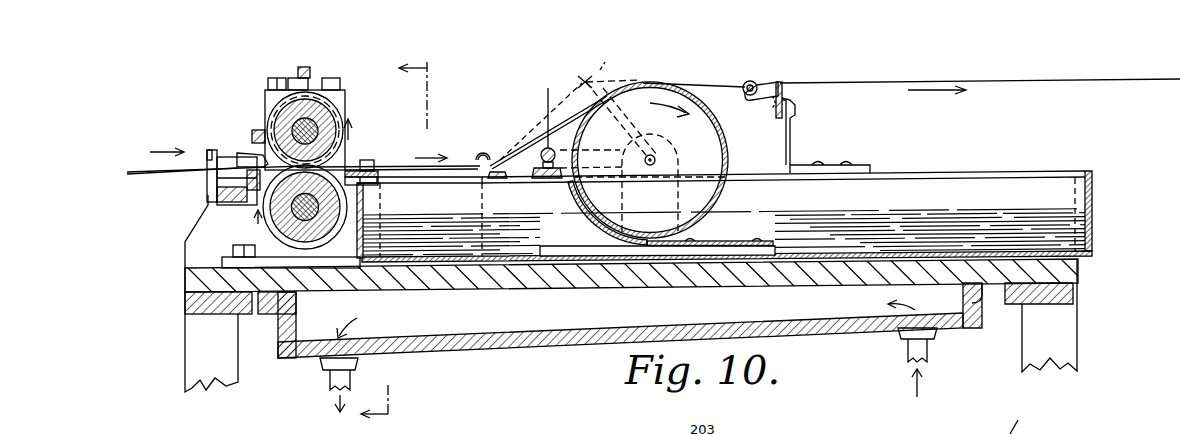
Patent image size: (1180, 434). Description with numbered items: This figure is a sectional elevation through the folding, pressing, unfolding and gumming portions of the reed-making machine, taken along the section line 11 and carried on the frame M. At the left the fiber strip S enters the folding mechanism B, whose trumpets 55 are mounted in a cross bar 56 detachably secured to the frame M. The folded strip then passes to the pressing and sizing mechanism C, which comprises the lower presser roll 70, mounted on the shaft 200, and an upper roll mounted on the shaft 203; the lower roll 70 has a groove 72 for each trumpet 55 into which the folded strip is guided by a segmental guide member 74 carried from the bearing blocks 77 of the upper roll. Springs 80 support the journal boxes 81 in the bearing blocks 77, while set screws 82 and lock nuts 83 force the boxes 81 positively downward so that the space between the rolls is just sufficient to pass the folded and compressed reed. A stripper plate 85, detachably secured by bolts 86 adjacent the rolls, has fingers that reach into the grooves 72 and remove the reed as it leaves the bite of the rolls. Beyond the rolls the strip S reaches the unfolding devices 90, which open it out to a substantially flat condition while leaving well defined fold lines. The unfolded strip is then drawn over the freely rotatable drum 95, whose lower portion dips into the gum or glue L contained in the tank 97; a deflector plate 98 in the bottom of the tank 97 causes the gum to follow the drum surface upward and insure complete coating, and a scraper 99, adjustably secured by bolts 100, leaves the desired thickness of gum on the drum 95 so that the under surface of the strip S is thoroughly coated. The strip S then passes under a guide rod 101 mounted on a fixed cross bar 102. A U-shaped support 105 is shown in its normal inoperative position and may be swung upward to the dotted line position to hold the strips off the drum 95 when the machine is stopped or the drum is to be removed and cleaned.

The section line 11 is at (406, 243).
The folding trumpet 55 is at (241, 152).
The cross bar 56 is at (220, 178).
The lower presser roll 70 is at (296, 218).
The groove 72 is at (334, 235).
The guide member 74 is at (285, 103).
The bearing block 77 is at (341, 110).
The spring 80 is at (333, 155).
The journal box 81 is at (346, 112).
The set screw 82 is at (279, 70).
The lock nut 83 is at (312, 84).
The stripper plate 85 is at (362, 182).
The bolt 86 is at (369, 162).
The unfolding device 90 is at (480, 170).
The drum 95 is at (722, 152).
The tank 97 is at (1090, 196).
The deflector plate 98 is at (578, 205).
The scraper 99 is at (548, 182).
The bolt 100 is at (548, 175).
The guide rod 101 is at (752, 82).
The cross bar 102 is at (780, 117).
The U-shaped support 105 is at (580, 82).
The shaft 200 is at (302, 207).
The shaft 203 is at (314, 134).
The folding mechanism B is at (226, 152).
The pressing and sizing mechanism C is at (330, 102).
The gum or glue L is at (877, 214).
The frame M is at (196, 393).
The fiber strip S is at (142, 175).